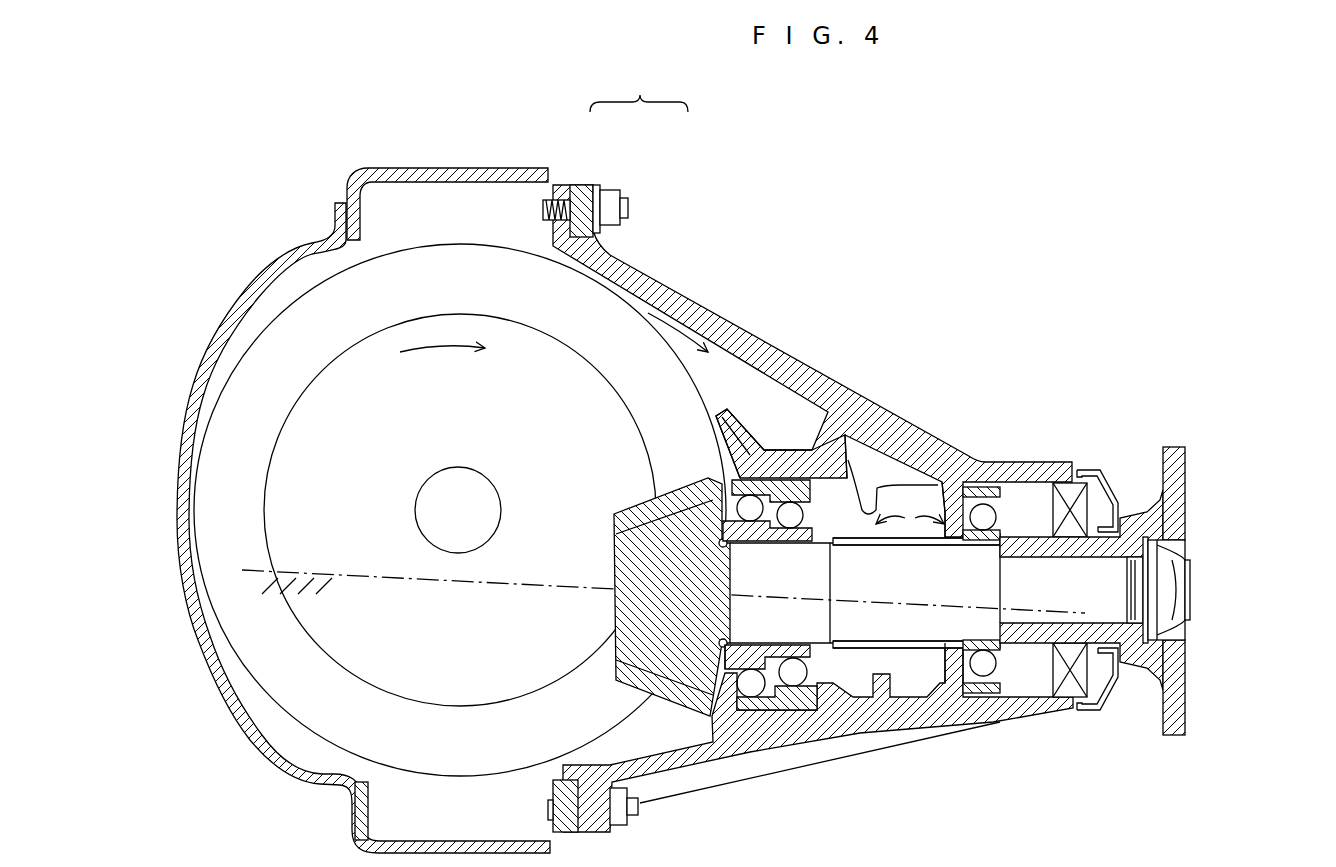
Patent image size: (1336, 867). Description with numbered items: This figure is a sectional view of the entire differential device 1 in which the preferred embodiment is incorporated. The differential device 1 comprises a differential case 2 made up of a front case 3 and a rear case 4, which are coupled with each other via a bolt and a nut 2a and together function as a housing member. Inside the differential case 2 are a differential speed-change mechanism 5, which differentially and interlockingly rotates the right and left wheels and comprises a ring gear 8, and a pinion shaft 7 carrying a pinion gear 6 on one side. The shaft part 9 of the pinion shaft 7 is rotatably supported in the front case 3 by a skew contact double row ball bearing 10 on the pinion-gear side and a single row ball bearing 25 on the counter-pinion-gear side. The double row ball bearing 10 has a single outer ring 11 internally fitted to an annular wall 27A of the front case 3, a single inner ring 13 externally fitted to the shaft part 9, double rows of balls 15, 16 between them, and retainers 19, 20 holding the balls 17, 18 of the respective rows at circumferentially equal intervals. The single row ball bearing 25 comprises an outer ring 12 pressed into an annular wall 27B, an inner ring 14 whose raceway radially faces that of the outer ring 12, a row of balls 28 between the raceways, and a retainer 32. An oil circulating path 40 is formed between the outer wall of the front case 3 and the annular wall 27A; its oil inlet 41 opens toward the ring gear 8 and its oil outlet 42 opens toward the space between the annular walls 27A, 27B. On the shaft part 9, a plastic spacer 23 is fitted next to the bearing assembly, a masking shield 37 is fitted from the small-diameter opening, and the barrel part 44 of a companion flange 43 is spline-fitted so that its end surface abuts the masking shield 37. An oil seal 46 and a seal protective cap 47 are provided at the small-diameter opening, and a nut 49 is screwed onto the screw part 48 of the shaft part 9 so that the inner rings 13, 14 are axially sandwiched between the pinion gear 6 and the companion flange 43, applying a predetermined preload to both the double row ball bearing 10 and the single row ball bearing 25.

The differential device 1 is at (738, 250).
The differential case 2 is at (639, 90).
The bolt and nut 2a is at (580, 205).
The front case 3 is at (646, 278).
The rear case 4 is at (550, 172).
The differential speed-change mechanism 5 is at (292, 305).
The pinion gear 6 is at (622, 505).
The pinion shaft 7 is at (862, 648).
The ring gear 8 is at (268, 388).
The shaft part 9 is at (904, 620).
The double row ball bearing 10 is at (808, 474).
The outer ring 11 is at (783, 694).
The outer ring 12 is at (985, 692).
The inner ring 13 is at (775, 540).
The inner ring 14 is at (985, 542).
The row of balls 15 is at (752, 690).
The row of balls 16 is at (797, 682).
The ball 17 is at (752, 700).
The ball 18 is at (803, 702).
The retainer 19 is at (733, 704).
The retainer 20 is at (846, 480).
The plastic spacer 23 is at (930, 650).
The single row ball bearing 25 is at (994, 490).
The annular wall 27A is at (765, 450).
The annular wall 27B is at (952, 480).
The row of balls 28 is at (983, 670).
The retainer 32 is at (1013, 672).
The masking shield 37 is at (1020, 502).
The oil circulating path 40 is at (702, 302).
The oil inlet 41 is at (690, 365).
The oil outlet 42 is at (910, 473).
The companion flange 43 is at (1188, 480).
The barrel part 44 is at (1113, 692).
The oil seal 46 is at (1082, 507).
The seal protective cap 47 is at (1107, 712).
The screw part 48 is at (1192, 604).
The nut 49 is at (1167, 585).